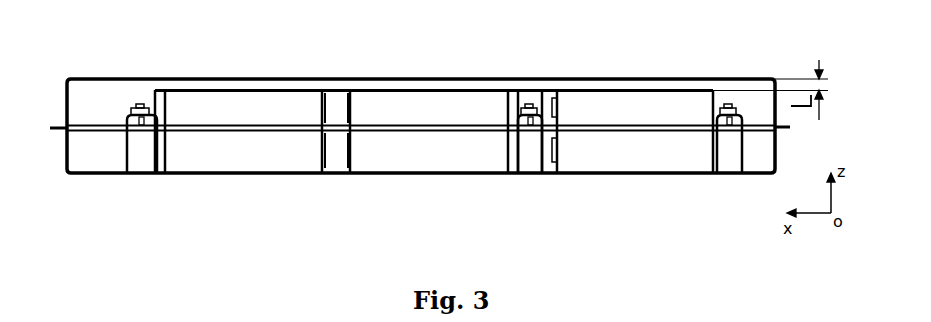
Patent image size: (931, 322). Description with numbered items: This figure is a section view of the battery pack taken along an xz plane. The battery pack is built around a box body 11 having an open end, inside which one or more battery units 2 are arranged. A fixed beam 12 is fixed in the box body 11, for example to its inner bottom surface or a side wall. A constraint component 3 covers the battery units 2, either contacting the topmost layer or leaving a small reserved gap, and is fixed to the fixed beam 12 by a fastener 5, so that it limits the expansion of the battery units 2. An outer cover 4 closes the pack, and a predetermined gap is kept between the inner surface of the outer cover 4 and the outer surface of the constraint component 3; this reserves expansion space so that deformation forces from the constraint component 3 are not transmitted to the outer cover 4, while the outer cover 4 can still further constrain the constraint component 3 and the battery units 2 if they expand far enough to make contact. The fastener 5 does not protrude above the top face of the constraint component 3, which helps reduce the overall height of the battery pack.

The battery unit 2 is at (637, 160).
The constraint component 3 is at (248, 92).
The outer cover 4 is at (413, 80).
The fastener 5 is at (140, 106).
The box body 11 is at (427, 177).
The fixed beam 12 is at (140, 165).